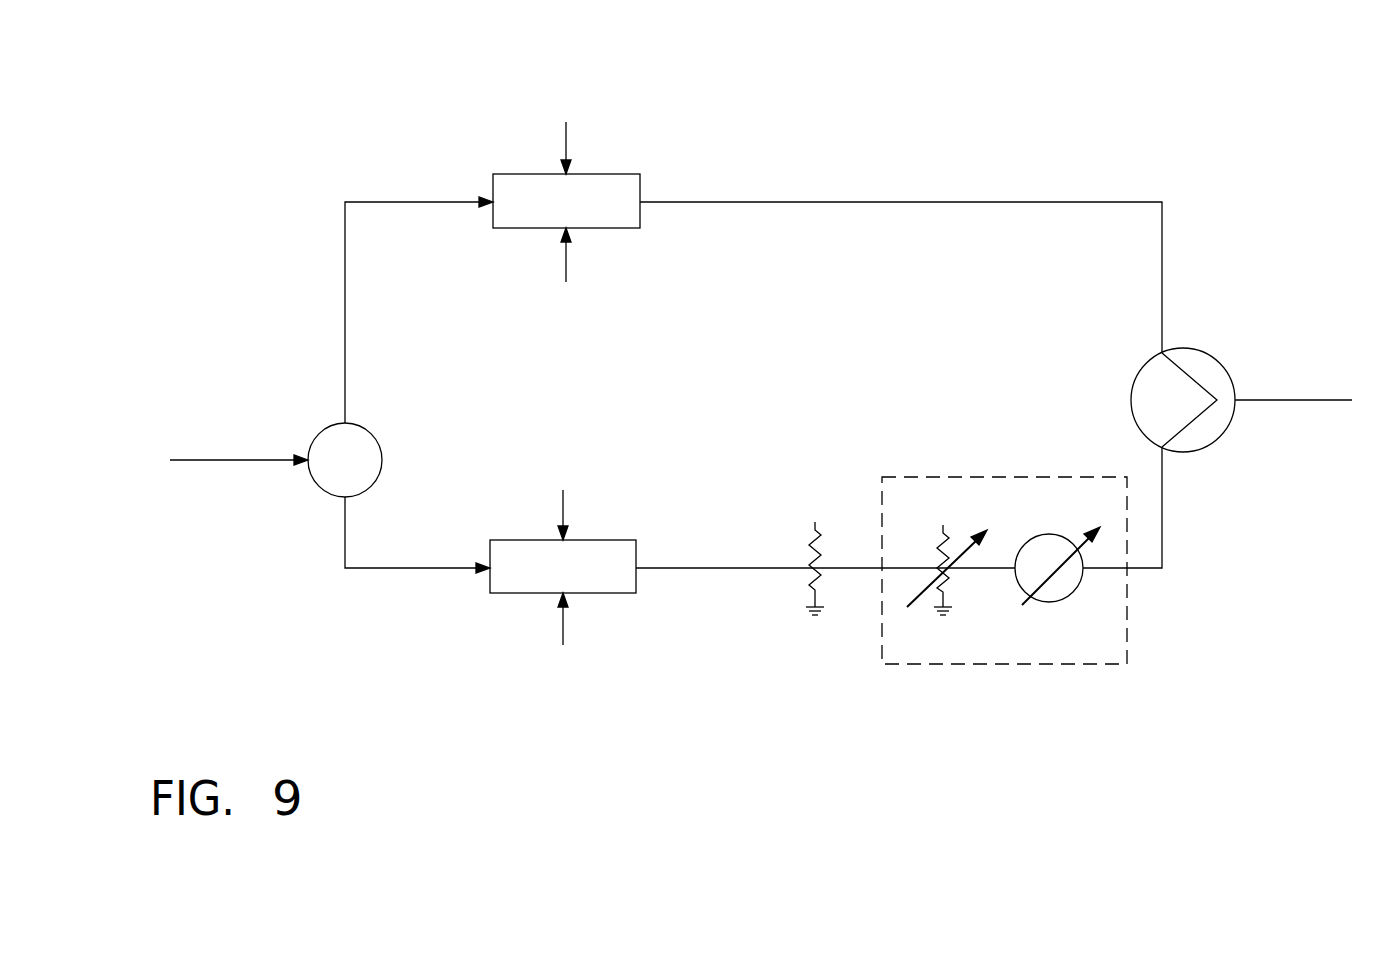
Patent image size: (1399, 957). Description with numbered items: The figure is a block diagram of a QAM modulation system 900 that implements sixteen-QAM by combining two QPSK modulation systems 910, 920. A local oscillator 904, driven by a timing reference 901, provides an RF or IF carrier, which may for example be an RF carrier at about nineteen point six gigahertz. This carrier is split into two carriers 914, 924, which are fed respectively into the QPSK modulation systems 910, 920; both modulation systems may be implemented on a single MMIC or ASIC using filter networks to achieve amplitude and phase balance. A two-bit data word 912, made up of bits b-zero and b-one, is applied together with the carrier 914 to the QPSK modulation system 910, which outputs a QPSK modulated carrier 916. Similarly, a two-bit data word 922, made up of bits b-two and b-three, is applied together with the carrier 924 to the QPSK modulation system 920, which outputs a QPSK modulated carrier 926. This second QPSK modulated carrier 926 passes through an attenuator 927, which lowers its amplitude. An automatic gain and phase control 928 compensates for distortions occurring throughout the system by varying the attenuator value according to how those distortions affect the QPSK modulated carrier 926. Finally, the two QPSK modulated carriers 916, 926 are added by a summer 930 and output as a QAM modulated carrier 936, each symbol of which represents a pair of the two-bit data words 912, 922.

The QAM modulation system 900 is at (1193, 108).
The timing reference 901 is at (240, 459).
The local oscillator 904 is at (376, 437).
The QPSK modulation system 910 is at (615, 174).
The two-bit data word 912 is at (562, 137).
The carrier 914 is at (418, 203).
The QPSK modulated carrier 916 is at (893, 201).
The QPSK modulation system 920 is at (612, 540).
The two-bit data word 922 is at (559, 504).
The carrier 924 is at (418, 567).
The QPSK modulated carrier 926 is at (1163, 506).
The attenuator 927 is at (811, 545).
The automatic gain and phase control 928 is at (1158, 631).
The summer 930 is at (1140, 365).
The QAM modulated carrier 936 is at (1283, 400).